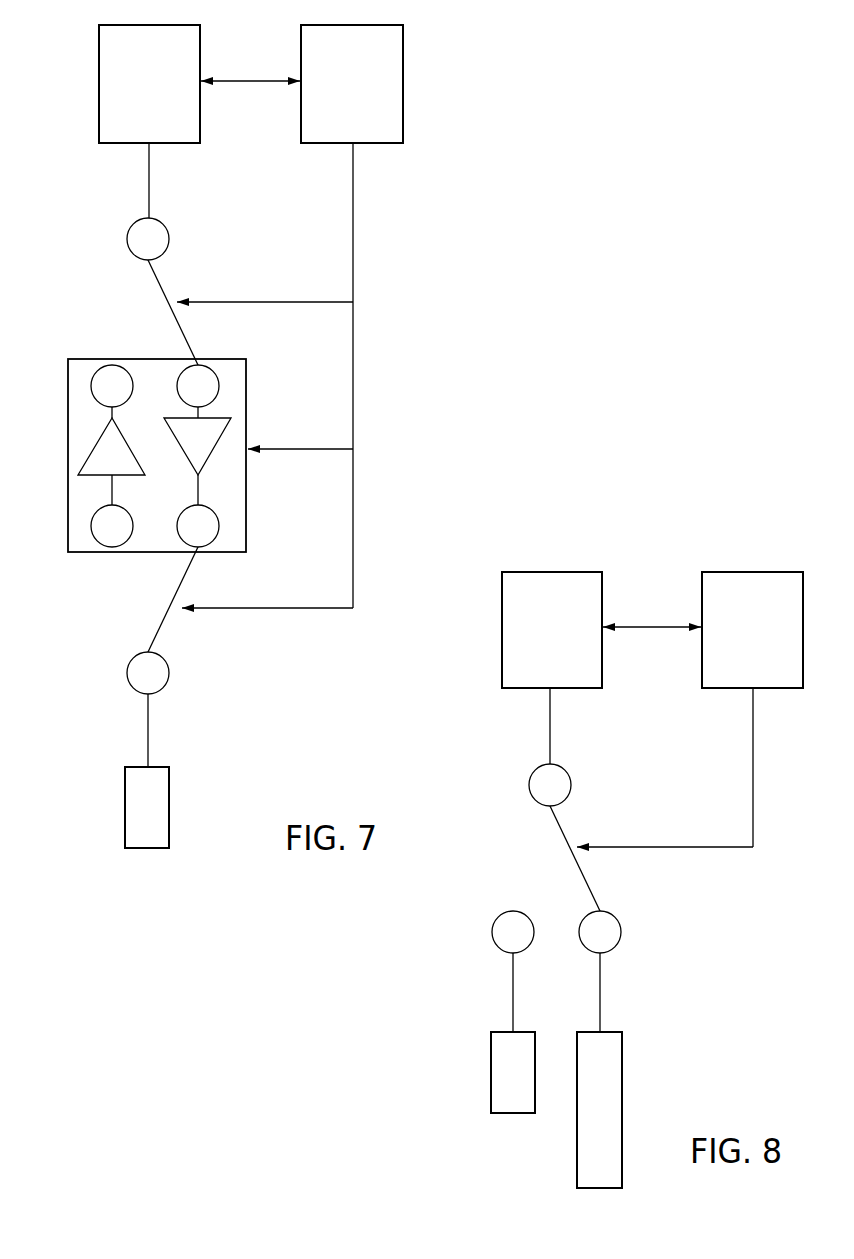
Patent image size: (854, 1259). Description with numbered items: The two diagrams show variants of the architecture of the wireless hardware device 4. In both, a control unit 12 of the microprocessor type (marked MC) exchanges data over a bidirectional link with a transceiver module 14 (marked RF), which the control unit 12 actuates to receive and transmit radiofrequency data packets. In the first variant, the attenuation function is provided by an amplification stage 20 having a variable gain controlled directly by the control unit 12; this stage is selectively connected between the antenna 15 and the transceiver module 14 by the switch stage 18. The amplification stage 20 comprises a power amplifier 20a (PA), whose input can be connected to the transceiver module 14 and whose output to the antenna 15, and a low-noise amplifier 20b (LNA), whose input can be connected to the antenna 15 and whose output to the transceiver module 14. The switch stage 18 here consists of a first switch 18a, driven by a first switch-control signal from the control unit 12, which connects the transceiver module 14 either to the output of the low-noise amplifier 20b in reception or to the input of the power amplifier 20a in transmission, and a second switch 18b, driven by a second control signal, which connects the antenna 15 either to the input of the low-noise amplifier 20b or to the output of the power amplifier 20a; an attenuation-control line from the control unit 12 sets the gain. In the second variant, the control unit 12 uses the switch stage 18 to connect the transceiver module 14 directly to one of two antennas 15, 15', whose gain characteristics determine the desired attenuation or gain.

In FIG. 7, the wireless hardware device 4 is at (472, 137).
In FIG. 8, the wireless hardware device 4 is at (746, 946).
In FIG. 7, the control unit 12 is at (384, 126).
In FIG. 8, the control unit 12 is at (715, 590).
In FIG. 7, the transceiver module 14 is at (178, 135).
In FIG. 8, the transceiver module 14 is at (570, 590).
In FIG. 7, the antenna 15 is at (190, 771).
In FIG. 8, the antenna 15 is at (486, 1033).
In FIG. 8, the antenna 15' is at (631, 1070).
In FIG. 7, the switch stage 18 is at (98, 223).
In FIG. 8, the switch stage 18 is at (603, 873).
In FIG. 7, the first switch 18a is at (170, 300).
In FIG. 7, the second switch 18b is at (170, 608).
In FIG. 7, the amplification stage 20 is at (66, 519).
In FIG. 7, the power amplifier 20a is at (205, 449).
In FIG. 7, the low-noise amplifier 20b is at (110, 440).